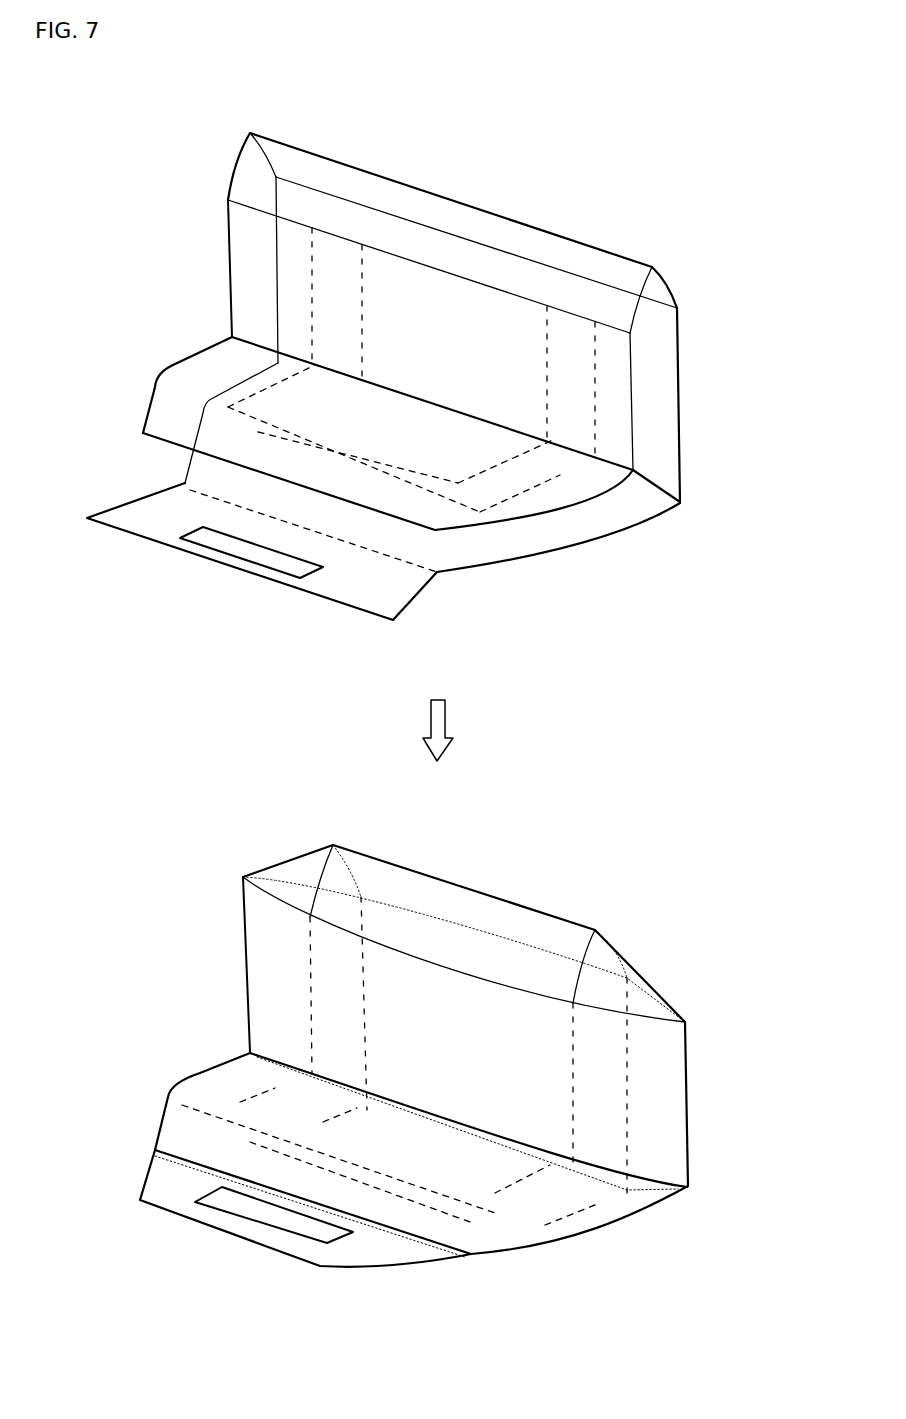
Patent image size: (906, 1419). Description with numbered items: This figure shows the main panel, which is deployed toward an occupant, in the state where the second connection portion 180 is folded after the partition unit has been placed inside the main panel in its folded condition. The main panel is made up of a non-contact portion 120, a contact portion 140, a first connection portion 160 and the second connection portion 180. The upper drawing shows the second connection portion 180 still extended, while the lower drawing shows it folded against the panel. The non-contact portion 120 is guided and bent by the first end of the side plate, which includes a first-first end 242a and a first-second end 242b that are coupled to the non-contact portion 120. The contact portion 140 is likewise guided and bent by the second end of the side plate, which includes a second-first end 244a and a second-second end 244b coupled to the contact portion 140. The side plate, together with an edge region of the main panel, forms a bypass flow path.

The non-contact portion 120 is at (247, 284).
The contact portion 140 is at (692, 459).
The first connection portion 160 is at (531, 205).
The second connection portion 180 is at (150, 556).
The 1-1 end 242a is at (236, 400).
The 1-2 end 242b is at (306, 260).
The 2-1 end 244a is at (558, 492).
The 2-2 end 244b is at (603, 381).